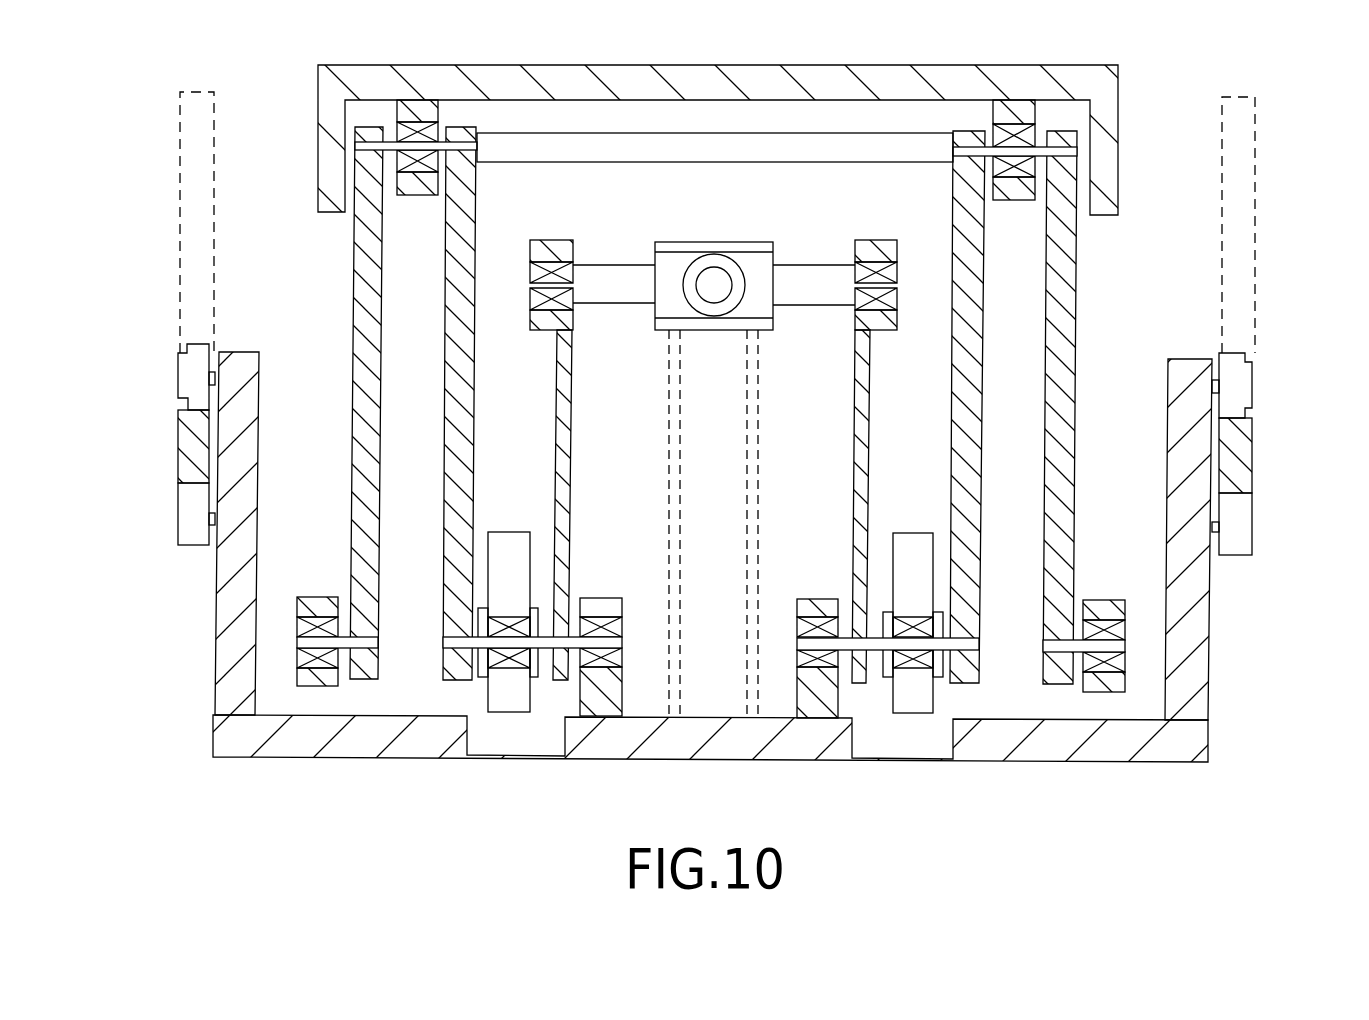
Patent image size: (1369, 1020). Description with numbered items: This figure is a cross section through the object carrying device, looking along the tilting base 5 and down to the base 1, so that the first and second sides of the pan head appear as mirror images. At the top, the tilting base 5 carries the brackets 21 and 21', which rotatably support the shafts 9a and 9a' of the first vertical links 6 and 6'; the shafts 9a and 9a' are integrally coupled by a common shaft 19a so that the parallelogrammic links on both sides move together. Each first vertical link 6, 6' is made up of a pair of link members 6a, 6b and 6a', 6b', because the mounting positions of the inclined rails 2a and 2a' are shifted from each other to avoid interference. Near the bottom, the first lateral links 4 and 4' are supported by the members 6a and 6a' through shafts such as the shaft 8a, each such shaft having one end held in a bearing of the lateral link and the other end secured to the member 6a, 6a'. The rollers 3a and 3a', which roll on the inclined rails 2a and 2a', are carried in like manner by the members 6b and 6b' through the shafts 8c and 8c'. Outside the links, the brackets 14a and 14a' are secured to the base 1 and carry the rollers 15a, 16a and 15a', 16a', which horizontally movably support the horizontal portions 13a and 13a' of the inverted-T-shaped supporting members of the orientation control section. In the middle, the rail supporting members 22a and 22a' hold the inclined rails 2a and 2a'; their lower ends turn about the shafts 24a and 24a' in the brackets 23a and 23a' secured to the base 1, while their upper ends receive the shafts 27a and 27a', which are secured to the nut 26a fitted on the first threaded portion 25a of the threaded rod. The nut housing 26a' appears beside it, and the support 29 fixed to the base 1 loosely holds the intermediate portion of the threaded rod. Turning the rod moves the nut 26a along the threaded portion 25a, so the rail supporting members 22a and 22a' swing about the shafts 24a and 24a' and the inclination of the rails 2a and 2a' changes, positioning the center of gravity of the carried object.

The base 1 is at (810, 761).
The inclined rail 2a is at (509, 599).
The inclined rail 2a' is at (915, 596).
The roller 3a is at (480, 660).
The roller 3a' is at (942, 664).
The first lateral link 4 is at (317, 615).
The first lateral link 4' is at (1104, 616).
The tilting base 5 is at (740, 65).
The first vertical link 6 is at (411, 403).
The first vertical link 6' is at (1014, 407).
The link member 6a is at (336, 403).
The link member 6a' is at (1094, 407).
The link member 6b is at (488, 403).
The link member 6b' is at (934, 407).
The shaft 8a is at (300, 647).
The shaft 8c is at (503, 642).
The shaft 8c' is at (918, 650).
The shaft 9a is at (446, 171).
The shaft 9a' is at (987, 174).
The horizontal portion 13a is at (154, 446).
The horizontal portion 13a' is at (1278, 455).
The bracket 14a is at (197, 533).
The bracket 14a' is at (1230, 539).
The roller 15a is at (158, 514).
The roller 15a' is at (1278, 524).
The roller 16a is at (157, 308).
The roller 16a' is at (1275, 314).
The common shaft 19a is at (850, 160).
The bracket 21 is at (417, 177).
The bracket 21' is at (1014, 179).
The rail supporting member 22a is at (603, 505).
The rail supporting member 22a' is at (817, 506).
The bracket 23a is at (564, 711).
The bracket 23a' is at (857, 712).
The shaft 24a is at (621, 617).
The shaft 24a' is at (800, 617).
The first threaded portion 25a is at (717, 282).
The nut 26a is at (714, 260).
The nut housing 26a' is at (905, 359).
The shaft 27a is at (592, 276).
The shaft 27a' is at (835, 276).
The support 29 is at (666, 493).